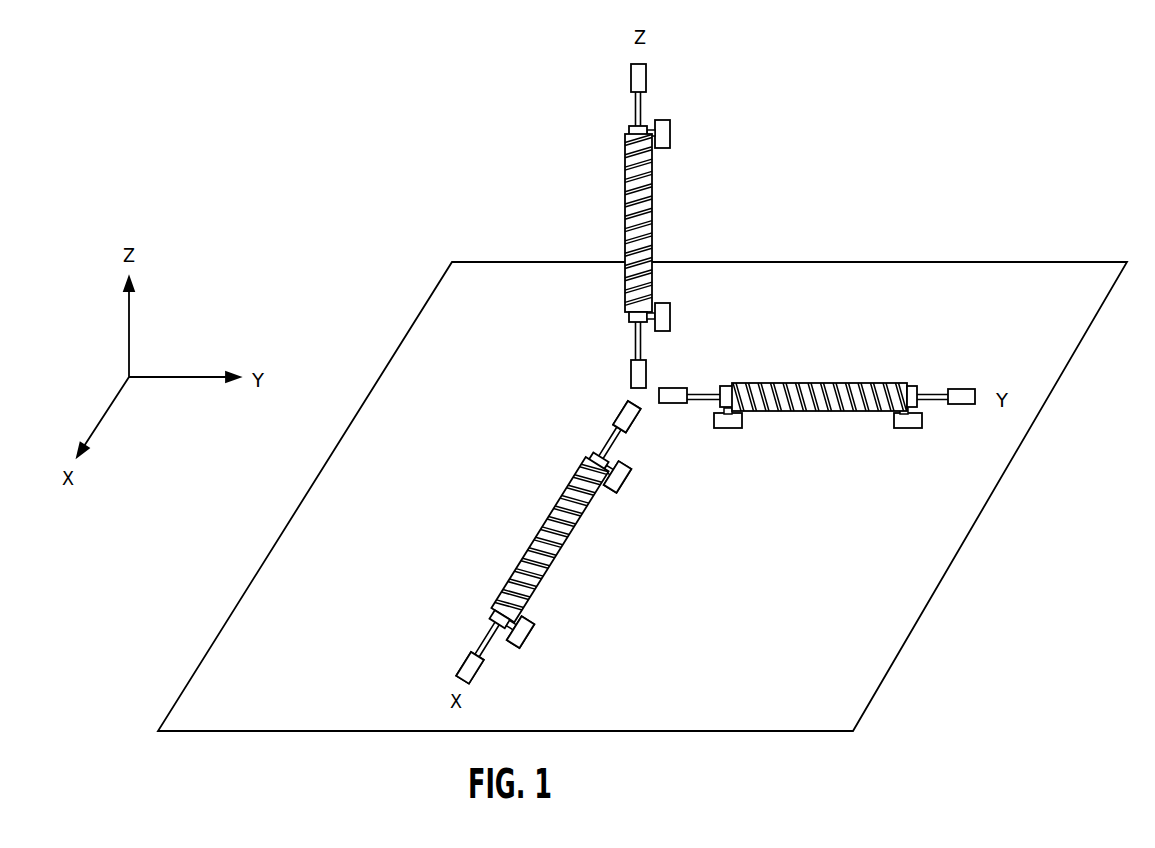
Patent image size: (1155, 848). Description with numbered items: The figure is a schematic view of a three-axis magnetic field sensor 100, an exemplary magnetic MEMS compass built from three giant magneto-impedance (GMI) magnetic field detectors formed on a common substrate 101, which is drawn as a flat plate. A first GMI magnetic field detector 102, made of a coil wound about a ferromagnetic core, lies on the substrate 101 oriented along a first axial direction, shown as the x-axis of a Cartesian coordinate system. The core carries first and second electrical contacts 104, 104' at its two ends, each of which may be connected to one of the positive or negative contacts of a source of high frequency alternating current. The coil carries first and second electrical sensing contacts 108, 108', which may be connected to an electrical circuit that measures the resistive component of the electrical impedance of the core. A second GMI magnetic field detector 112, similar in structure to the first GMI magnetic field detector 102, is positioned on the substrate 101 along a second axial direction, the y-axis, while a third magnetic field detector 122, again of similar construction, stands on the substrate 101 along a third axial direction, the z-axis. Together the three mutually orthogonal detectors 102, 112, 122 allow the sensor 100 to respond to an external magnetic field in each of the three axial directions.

The three-axis magnetic field sensor 100 is at (873, 143).
The substrate 101 is at (995, 268).
The first GMI magnetic field detector 102 is at (592, 538).
The first electrical contact 104 is at (650, 434).
The second electrical contact 104' is at (444, 658).
The first electrical contact 108 is at (640, 492).
The second electrical contact 108' is at (542, 650).
The second GMI magnetic field detector 112 is at (838, 368).
The third magnetic field detector 122 is at (603, 220).